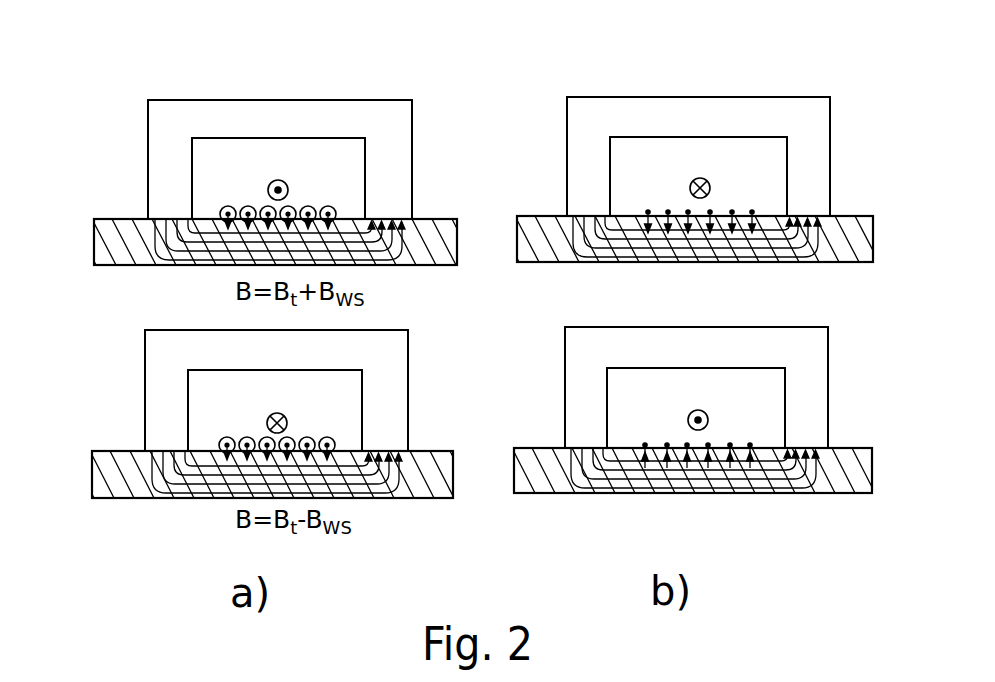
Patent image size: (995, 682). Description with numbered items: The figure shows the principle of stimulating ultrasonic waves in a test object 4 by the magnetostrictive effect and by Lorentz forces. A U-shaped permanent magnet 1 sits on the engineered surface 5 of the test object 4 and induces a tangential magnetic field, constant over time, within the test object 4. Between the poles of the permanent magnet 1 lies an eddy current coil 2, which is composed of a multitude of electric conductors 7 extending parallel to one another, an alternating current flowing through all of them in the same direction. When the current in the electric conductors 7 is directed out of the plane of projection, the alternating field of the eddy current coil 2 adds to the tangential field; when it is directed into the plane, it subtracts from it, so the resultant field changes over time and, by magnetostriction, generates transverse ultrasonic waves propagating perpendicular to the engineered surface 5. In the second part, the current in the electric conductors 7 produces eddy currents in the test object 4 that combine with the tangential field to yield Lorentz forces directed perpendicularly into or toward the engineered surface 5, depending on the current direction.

The U-shaped permanent magnet 1 is at (393, 112).
The eddy current coil 2 is at (236, 202).
The test object 4 is at (115, 242).
The engineered surface 5 is at (431, 211).
The electric conductors 7 is at (328, 206).